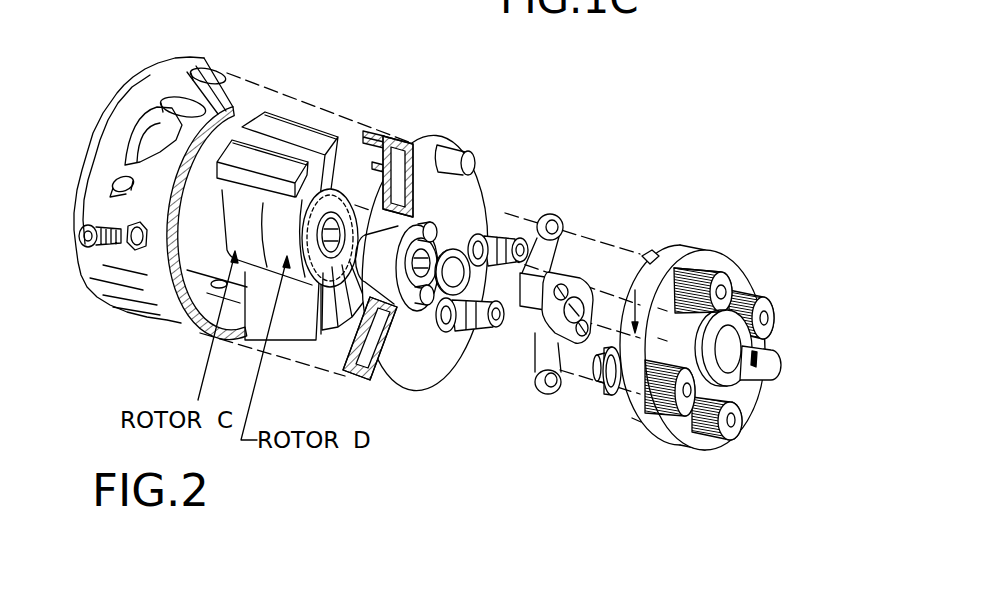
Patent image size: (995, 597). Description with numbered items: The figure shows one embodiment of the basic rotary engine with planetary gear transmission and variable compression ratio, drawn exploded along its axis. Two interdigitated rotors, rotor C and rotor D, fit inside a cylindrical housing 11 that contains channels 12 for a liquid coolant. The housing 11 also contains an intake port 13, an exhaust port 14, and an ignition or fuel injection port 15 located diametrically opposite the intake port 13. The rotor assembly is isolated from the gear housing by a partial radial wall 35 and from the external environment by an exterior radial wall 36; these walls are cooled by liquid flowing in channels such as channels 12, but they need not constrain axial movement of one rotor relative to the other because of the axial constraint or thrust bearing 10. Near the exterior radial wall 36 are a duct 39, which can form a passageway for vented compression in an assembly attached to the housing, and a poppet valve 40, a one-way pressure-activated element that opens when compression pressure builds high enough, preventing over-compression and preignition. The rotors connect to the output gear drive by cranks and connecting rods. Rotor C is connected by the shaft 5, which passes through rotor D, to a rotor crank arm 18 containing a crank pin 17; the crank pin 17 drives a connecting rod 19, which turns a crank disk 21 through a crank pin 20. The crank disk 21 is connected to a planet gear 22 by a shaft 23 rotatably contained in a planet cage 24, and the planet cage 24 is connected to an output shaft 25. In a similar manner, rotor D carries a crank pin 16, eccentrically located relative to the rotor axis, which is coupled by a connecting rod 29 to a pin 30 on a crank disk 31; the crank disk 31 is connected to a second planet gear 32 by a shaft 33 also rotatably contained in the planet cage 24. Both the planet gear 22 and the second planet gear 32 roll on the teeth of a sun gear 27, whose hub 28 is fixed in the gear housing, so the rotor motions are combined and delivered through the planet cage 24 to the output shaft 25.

The shaft 5 is at (540, 300).
The axial constraint or thrust bearing 10 is at (440, 200).
The cylindrical housing 11 is at (147, 66).
The channels 12 is at (370, 128).
The intake port 13 is at (168, 100).
The exhaust port 14 is at (218, 72).
The ignition or fuel injection port 15 is at (195, 320).
The crank pin 16 is at (430, 298).
The crank pin 17 is at (535, 225).
The rotor crank arm 18 is at (573, 282).
The connecting rod 19 is at (543, 228).
The crank pin 20 is at (643, 253).
The crank disk 21 is at (660, 258).
The planet gear 22 is at (713, 280).
The shaft 23 is at (722, 288).
The planet cage 24 is at (695, 262).
The output shaft 25 is at (763, 367).
The sun gear 27 is at (740, 402).
The hub 28 is at (740, 380).
The connecting rod 29 is at (462, 335).
The pin 30 is at (593, 363).
The crank disk 31 is at (603, 366).
The second planet gear 32 is at (770, 297).
The shaft 33 is at (770, 313).
The partial radial wall 35 is at (380, 130).
The exterior radial wall 36 is at (213, 147).
The duct 39 is at (128, 186).
The poppet valve 40 is at (133, 250).